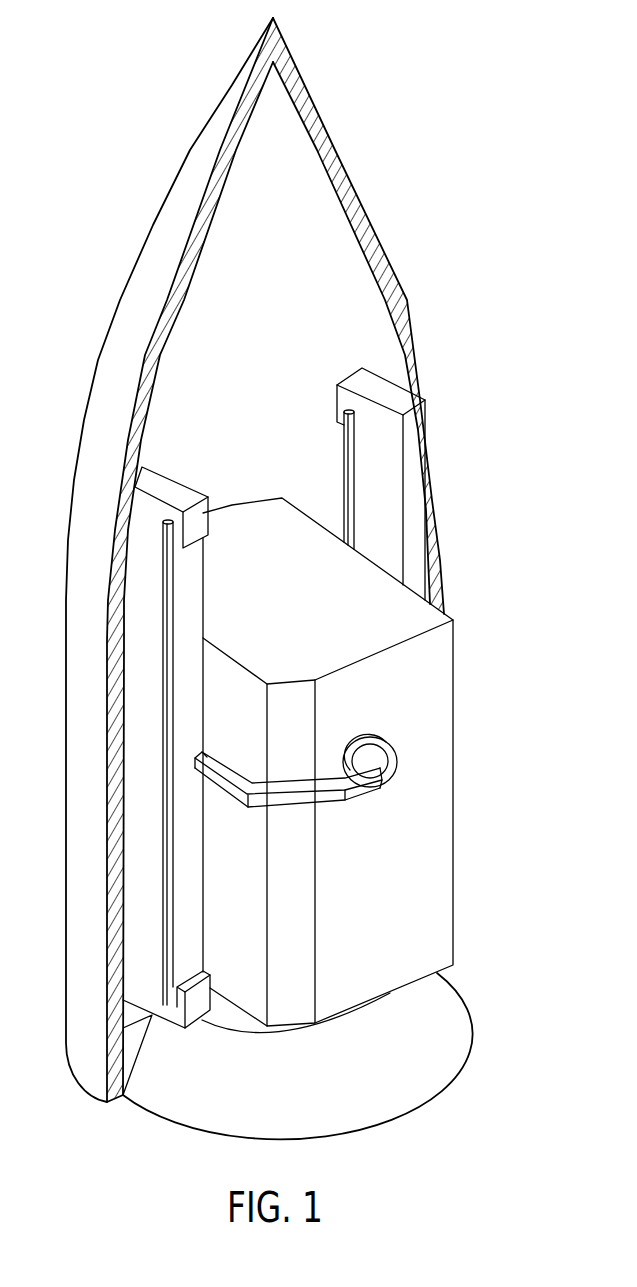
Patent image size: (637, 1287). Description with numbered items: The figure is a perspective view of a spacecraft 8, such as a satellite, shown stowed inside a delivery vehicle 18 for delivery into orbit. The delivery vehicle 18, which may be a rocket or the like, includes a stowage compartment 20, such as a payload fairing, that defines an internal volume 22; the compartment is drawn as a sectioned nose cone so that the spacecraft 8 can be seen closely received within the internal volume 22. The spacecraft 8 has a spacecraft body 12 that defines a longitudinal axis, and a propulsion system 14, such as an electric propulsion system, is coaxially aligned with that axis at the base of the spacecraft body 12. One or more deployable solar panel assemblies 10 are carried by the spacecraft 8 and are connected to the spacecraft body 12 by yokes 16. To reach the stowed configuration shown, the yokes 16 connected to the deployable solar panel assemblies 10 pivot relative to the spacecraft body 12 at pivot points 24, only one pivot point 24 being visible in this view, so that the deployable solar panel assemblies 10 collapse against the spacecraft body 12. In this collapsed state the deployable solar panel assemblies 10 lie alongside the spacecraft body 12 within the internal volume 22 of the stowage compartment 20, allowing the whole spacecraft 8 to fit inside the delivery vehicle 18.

The spacecraft 8 is at (476, 596).
The deployable solar panel assembly 10 is at (170, 492).
The spacecraft body 12 is at (447, 655).
The propulsion system 14 is at (463, 1000).
The yoke 16 is at (292, 807).
The delivery vehicle 18 is at (80, 962).
The stowage compartment 20 is at (333, 155).
The internal volume 22 is at (328, 250).
The pivot point 24 is at (390, 768).